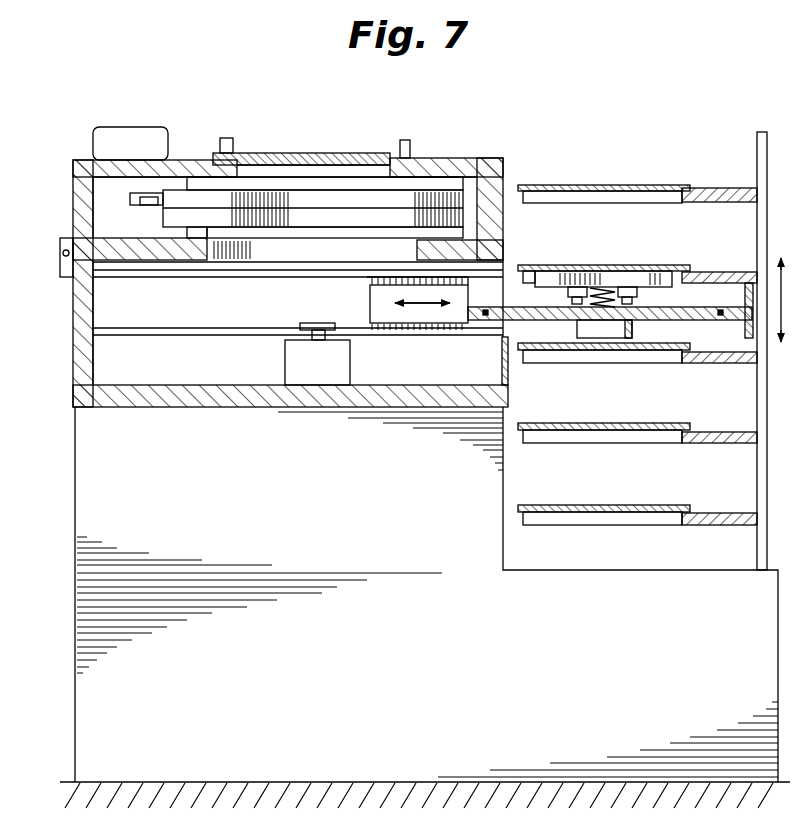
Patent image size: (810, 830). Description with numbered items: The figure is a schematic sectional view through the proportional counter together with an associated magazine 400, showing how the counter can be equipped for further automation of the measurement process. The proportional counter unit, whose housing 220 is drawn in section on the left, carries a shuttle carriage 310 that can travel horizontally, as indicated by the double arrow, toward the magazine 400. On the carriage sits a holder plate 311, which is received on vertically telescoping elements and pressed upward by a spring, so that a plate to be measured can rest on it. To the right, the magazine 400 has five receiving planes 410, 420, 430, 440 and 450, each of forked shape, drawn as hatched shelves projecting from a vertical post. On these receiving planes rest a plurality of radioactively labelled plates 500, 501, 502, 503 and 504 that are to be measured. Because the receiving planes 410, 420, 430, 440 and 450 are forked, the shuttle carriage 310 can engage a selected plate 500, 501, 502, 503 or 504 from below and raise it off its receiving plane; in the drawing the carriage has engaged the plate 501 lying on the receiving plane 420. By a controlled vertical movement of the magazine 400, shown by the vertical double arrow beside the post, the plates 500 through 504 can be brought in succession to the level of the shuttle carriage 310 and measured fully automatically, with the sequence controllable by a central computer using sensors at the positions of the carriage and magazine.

The drive unit housing 220 is at (157, 405).
The shuttle carriage 310 is at (528, 330).
The holder plate 311 is at (636, 278).
The magazine 400 is at (684, 124).
The receiving plane 410 is at (713, 188).
The receiving plane 420 is at (712, 272).
The receiving plane 430 is at (731, 358).
The receiving plane 440 is at (732, 442).
The receiving plane 450 is at (734, 520).
The plate 500 is at (602, 185).
The plate 501 is at (567, 265).
The plate 502 is at (602, 352).
The plate 503 is at (570, 423).
The plate 504 is at (580, 505).